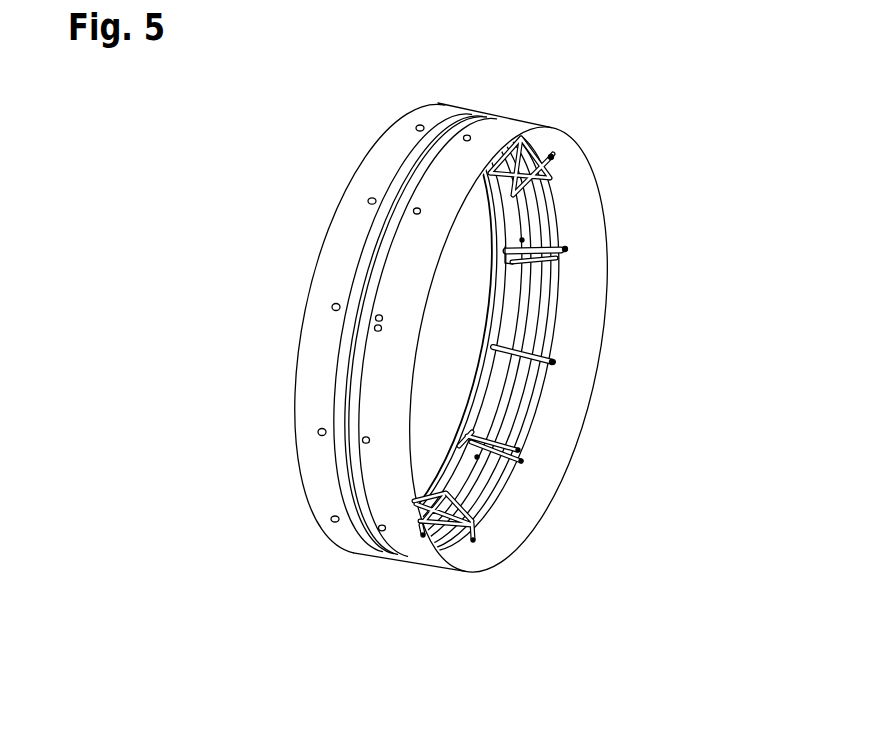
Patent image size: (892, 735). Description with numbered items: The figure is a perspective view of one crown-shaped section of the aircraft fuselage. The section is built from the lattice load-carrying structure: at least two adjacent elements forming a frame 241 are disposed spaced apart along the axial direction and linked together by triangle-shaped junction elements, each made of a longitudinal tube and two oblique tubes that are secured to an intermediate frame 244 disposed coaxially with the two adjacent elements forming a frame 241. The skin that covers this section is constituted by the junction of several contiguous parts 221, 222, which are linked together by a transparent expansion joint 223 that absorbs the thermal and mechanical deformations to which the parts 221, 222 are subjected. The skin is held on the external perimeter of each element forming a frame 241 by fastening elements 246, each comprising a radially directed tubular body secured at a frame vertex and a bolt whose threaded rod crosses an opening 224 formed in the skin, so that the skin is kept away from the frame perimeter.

The contiguous part of the skin 221 is at (357, 166).
The contiguous part of the skin 222 is at (601, 195).
The transparent expansion joint 223 is at (478, 110).
The opening 224 is at (566, 249).
The element forming a frame 241 is at (488, 309).
The intermediate frame 244 is at (522, 296).
The fastening element 246 is at (549, 172).